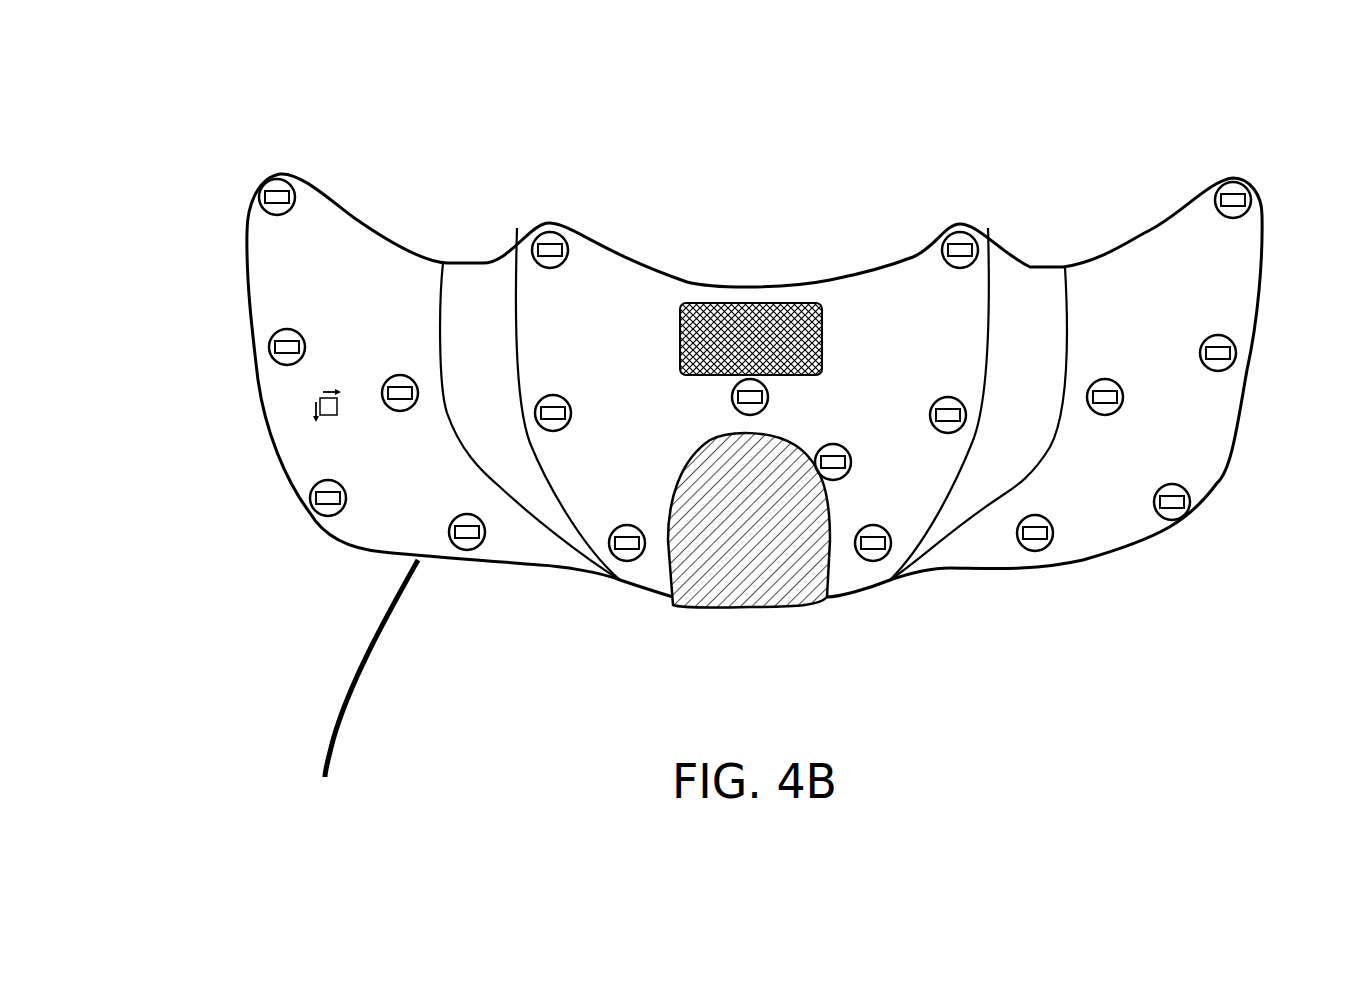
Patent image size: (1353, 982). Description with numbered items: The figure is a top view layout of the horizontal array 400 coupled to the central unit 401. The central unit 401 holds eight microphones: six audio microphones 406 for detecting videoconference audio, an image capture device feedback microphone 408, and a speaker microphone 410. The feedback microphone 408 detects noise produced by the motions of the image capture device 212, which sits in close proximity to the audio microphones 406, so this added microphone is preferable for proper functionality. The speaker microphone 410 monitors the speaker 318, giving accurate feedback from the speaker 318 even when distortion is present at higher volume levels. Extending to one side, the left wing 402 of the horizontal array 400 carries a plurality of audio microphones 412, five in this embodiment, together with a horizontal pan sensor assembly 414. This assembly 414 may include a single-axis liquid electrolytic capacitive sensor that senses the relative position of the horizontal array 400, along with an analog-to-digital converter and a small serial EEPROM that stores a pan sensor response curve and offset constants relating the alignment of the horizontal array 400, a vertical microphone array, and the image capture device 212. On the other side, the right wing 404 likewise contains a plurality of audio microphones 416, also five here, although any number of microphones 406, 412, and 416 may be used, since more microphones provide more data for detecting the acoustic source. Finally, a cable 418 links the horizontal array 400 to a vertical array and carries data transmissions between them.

The horizontal array 400 is at (350, 214).
The central unit 401 is at (655, 267).
The left wing 402 is at (383, 233).
The right wing 404 is at (1143, 228).
The audio microphones 406 is at (548, 232).
The image capture device feedback microphone 408 is at (472, 550).
The speaker microphone 410 is at (768, 400).
The audio microphones 412 is at (283, 178).
The horizontal pan sensor assembly 414 is at (307, 407).
The audio microphones 416 is at (1233, 181).
The cable 418 is at (340, 722).
The speaker 318 is at (730, 305).
The image capture device 212 is at (750, 607).